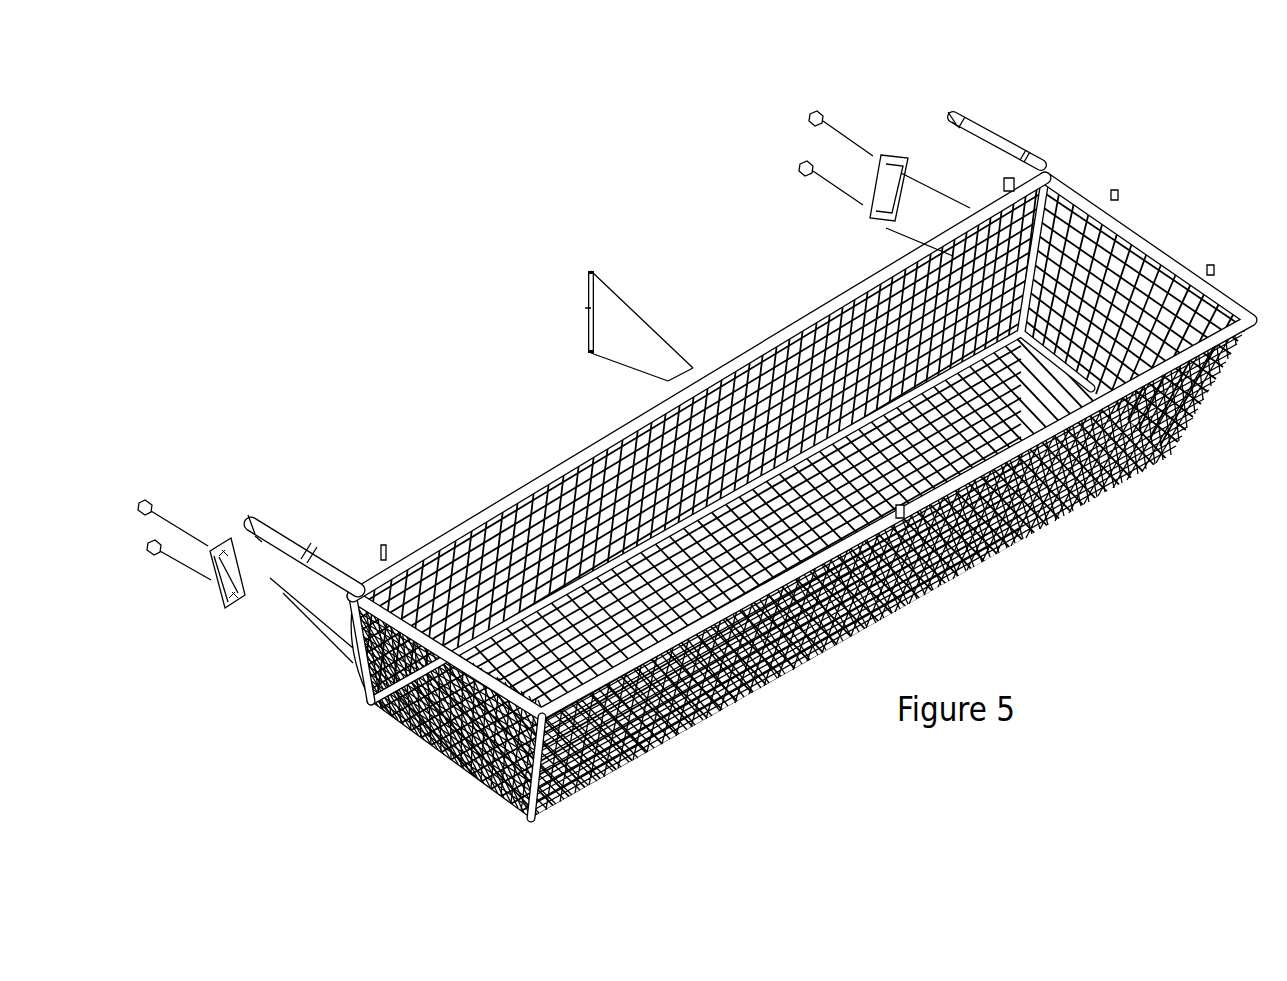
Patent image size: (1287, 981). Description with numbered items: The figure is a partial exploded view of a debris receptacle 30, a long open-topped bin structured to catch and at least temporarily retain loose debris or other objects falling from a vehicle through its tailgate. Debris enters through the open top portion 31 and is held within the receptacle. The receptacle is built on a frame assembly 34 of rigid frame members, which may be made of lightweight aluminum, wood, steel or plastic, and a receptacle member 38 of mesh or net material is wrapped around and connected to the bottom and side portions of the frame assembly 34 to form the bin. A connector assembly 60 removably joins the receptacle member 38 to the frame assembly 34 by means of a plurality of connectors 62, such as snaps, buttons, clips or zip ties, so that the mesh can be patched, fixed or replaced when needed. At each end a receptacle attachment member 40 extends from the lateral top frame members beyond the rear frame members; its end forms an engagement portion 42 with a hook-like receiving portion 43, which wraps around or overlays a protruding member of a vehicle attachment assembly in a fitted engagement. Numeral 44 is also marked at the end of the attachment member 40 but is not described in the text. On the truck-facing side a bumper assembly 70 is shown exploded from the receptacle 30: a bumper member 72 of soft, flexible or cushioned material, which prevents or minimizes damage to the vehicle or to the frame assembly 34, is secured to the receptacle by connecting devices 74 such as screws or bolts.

The debris receptacle 30 is at (453, 272).
The open top portion 31 is at (797, 299).
The frame assembly 34 is at (1200, 168).
The receptacle member 38 is at (505, 490).
The receptacle attachment member 40 is at (300, 537).
The engagement portion 42 is at (240, 466).
The receiving portion 43 is at (253, 548).
The handle end cap 44 is at (250, 504).
The connector assembly 60 is at (573, 233).
The connectors 62 is at (577, 300).
The bumper assembly 70 is at (185, 478).
The bumper member 72 is at (205, 586).
The connecting devices 74 is at (139, 461).